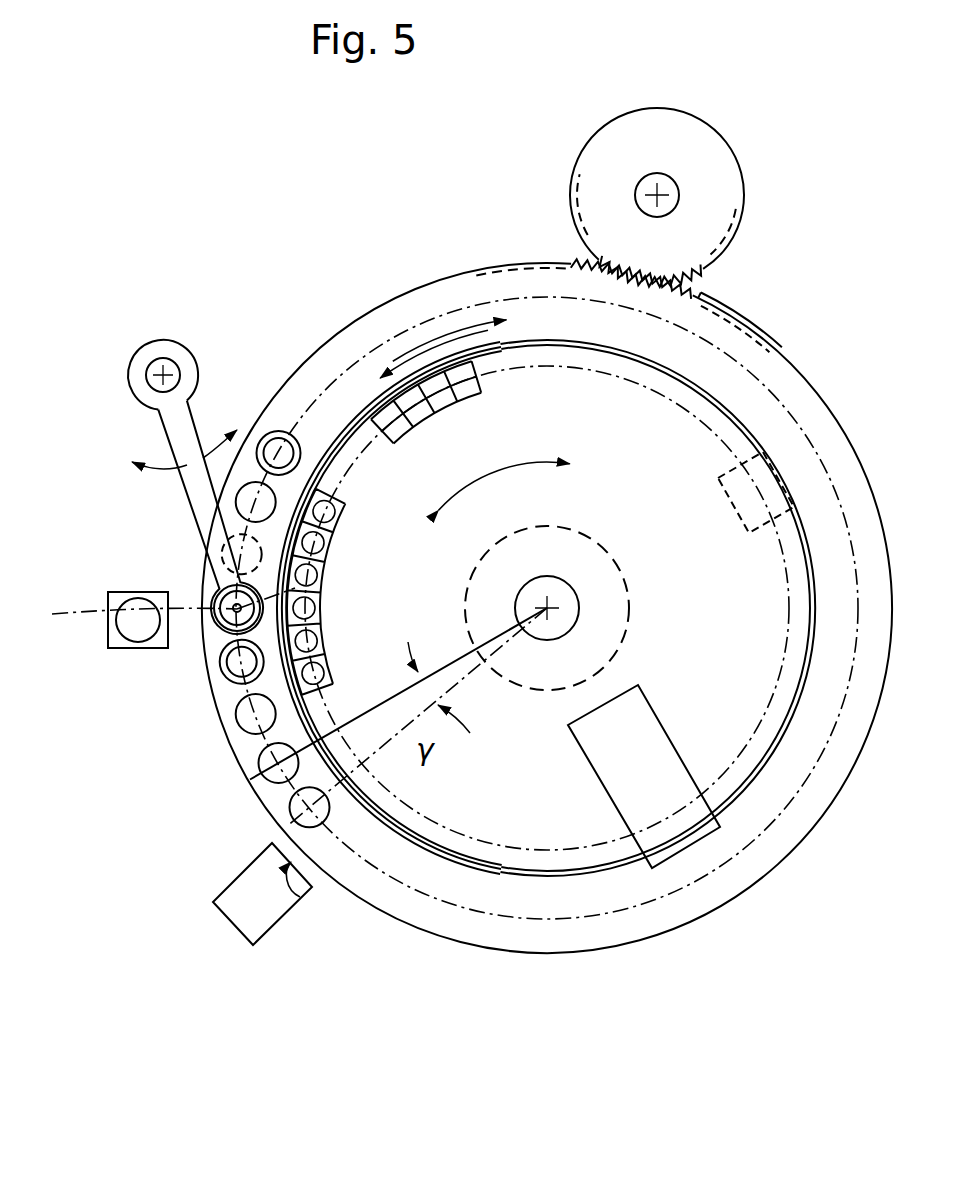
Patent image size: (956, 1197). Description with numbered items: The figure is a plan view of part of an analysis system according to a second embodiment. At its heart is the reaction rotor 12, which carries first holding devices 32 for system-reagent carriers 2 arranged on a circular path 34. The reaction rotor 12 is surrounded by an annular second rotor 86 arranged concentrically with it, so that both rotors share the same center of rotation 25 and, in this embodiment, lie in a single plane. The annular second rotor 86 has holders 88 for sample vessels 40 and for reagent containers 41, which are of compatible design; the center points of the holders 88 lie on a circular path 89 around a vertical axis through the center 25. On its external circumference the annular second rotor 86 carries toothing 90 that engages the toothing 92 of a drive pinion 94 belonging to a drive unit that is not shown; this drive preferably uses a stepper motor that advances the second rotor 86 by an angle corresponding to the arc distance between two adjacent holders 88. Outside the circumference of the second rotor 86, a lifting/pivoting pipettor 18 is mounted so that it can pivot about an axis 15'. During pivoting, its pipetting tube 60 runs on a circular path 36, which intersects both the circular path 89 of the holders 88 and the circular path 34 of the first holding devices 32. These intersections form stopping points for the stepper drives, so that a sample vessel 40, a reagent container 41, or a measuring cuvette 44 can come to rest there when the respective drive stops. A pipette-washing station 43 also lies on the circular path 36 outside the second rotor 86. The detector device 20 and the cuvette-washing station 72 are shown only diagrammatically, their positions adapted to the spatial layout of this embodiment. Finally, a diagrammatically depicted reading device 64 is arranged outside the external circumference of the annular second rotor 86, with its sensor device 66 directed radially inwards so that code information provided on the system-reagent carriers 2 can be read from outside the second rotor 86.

The system-reagent carrier 2 is at (336, 620).
The reaction rotor 12 is at (539, 764).
The axis 15' is at (142, 361).
The lifting/pivoting pipettor 18 is at (158, 432).
The detector device 20 is at (668, 745).
The center of rotation 25 is at (553, 599).
The first holding device 32 is at (420, 423).
The circular path 34 is at (535, 823).
The circular path 36 is at (55, 613).
The sample vessel 40 is at (226, 680).
The reagent container 41 is at (279, 450).
The pipette-washing station 43 is at (125, 648).
The measuring cuvette 44 is at (333, 574).
The pipetting tube 60 is at (232, 600).
The reading device 64 is at (240, 908).
The sensor device 66 is at (300, 897).
The cuvette-washing station 72 is at (745, 500).
The annular second rotor 86 is at (573, 930).
The holder 88 is at (243, 733).
The circular path 89 is at (455, 906).
The toothing 90 is at (700, 294).
The toothing 92 is at (700, 278).
The drive pinion 94 is at (655, 106).